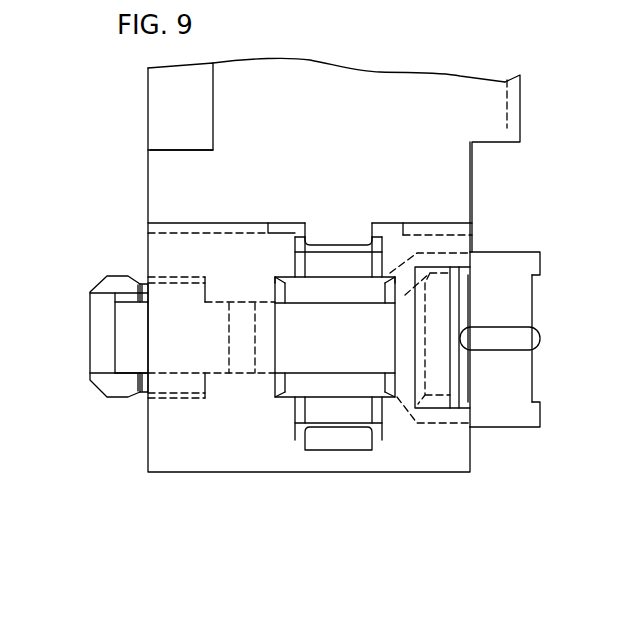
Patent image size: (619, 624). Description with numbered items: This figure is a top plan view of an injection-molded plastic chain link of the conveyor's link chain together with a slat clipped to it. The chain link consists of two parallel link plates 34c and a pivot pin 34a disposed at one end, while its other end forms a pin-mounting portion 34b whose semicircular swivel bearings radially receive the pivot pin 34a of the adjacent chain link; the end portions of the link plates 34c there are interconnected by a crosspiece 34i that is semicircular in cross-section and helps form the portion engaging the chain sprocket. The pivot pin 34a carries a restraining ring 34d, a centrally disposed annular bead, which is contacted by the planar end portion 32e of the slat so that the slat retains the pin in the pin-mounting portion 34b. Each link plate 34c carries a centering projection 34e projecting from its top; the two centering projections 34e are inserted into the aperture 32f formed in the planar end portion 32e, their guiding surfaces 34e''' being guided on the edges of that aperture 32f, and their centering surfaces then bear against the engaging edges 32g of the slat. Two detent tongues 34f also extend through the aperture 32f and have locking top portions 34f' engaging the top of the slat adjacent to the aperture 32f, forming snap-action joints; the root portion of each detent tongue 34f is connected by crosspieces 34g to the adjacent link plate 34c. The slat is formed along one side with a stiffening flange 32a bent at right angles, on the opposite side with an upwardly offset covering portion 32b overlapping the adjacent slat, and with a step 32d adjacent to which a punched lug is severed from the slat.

The stiffening flange 32a is at (520, 122).
The covering portion 32b is at (162, 118).
The step 32d is at (242, 222).
The planar end portion 32e is at (165, 427).
The aperture 32f is at (270, 340).
The engaging edges 32g is at (288, 272).
The pivot pin 34a is at (522, 377).
The pin-mounting portion 34b is at (88, 320).
The link plates 34c is at (498, 258).
The restraining ring 34d is at (492, 343).
The centering projections 34e is at (354, 278).
The guiding surfaces 34e''' is at (335, 319).
The detent tongues 34f is at (358, 190).
The locking top portions 34f' is at (338, 186).
The crosspieces 34g is at (310, 257).
The crosspiece 34i is at (175, 337).